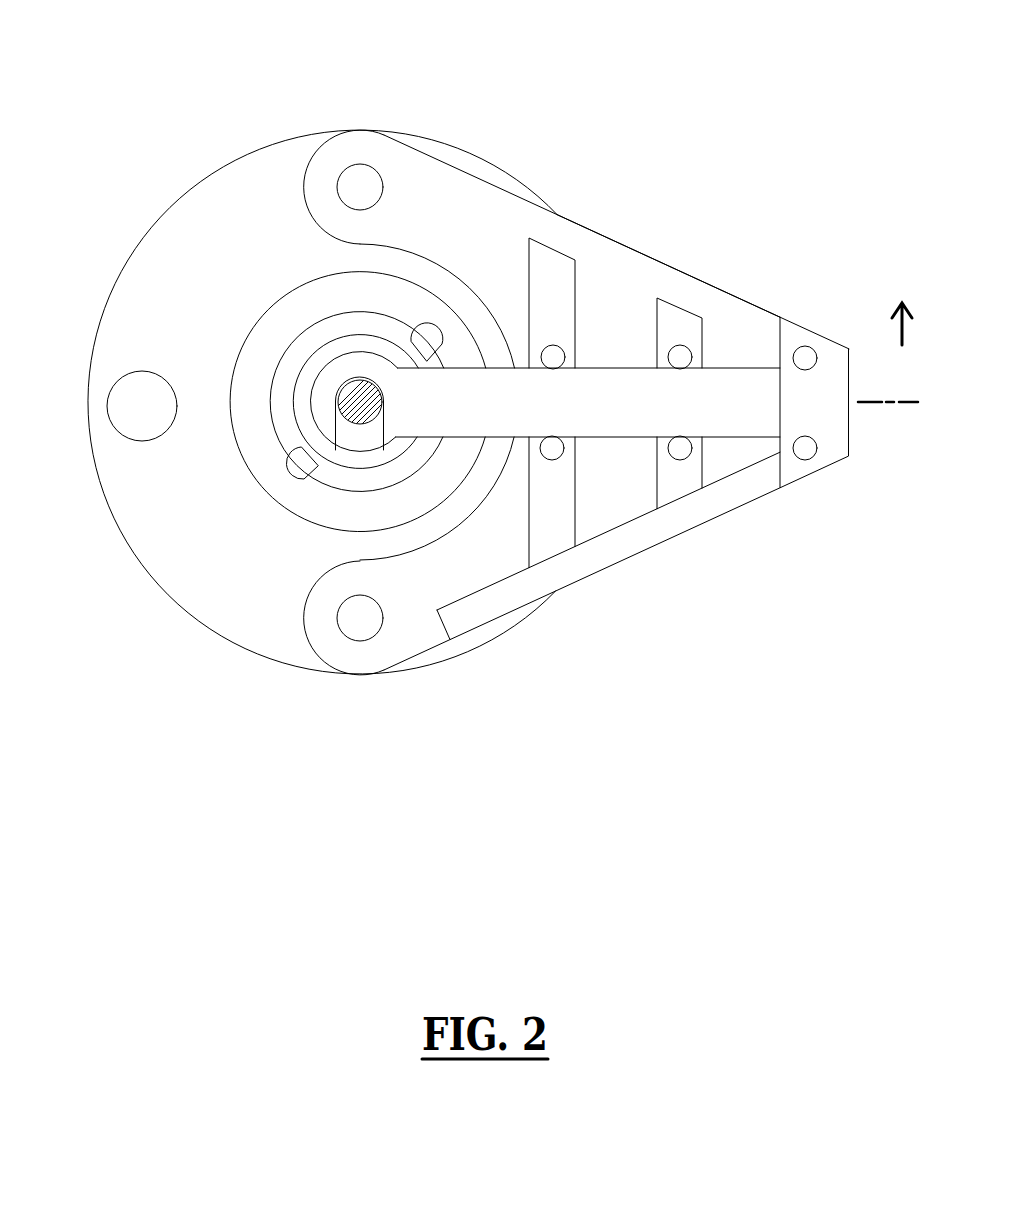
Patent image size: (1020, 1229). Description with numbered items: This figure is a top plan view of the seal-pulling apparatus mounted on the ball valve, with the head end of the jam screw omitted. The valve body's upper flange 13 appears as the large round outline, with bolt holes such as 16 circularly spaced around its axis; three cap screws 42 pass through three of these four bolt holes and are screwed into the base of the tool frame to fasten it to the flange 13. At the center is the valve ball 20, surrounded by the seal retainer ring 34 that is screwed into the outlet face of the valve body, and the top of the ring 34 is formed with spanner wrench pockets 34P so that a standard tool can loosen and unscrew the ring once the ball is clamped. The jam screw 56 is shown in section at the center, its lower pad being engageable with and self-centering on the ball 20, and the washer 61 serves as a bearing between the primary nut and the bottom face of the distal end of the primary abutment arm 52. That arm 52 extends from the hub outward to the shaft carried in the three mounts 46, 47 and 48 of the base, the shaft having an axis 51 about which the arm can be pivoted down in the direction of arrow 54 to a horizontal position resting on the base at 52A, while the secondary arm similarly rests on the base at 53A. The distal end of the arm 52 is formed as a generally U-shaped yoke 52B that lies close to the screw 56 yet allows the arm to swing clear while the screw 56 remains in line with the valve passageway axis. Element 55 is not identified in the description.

The upper flange 13 is at (211, 563).
The bolt hole 16 is at (140, 410).
The valve ball 20 is at (301, 415).
The seal retainer ring 34 is at (243, 378).
The spanner wrench pockets 34P is at (430, 330).
The cap screws 42 is at (360, 183).
The mount 46 is at (820, 464).
The mount 47 is at (674, 325).
The mount 48 is at (551, 276).
The axis 51 is at (871, 406).
The primary abutment arm 52 is at (750, 410).
The primary arm rest position on base top 52A is at (738, 340).
The yoke 52B is at (357, 378).
The secondary arm rest position on base top 53A is at (608, 293).
The arrow 54 is at (900, 338).
The strut 55 is at (645, 537).
The jam screw 56 is at (355, 400).
The washer 61 is at (357, 443).